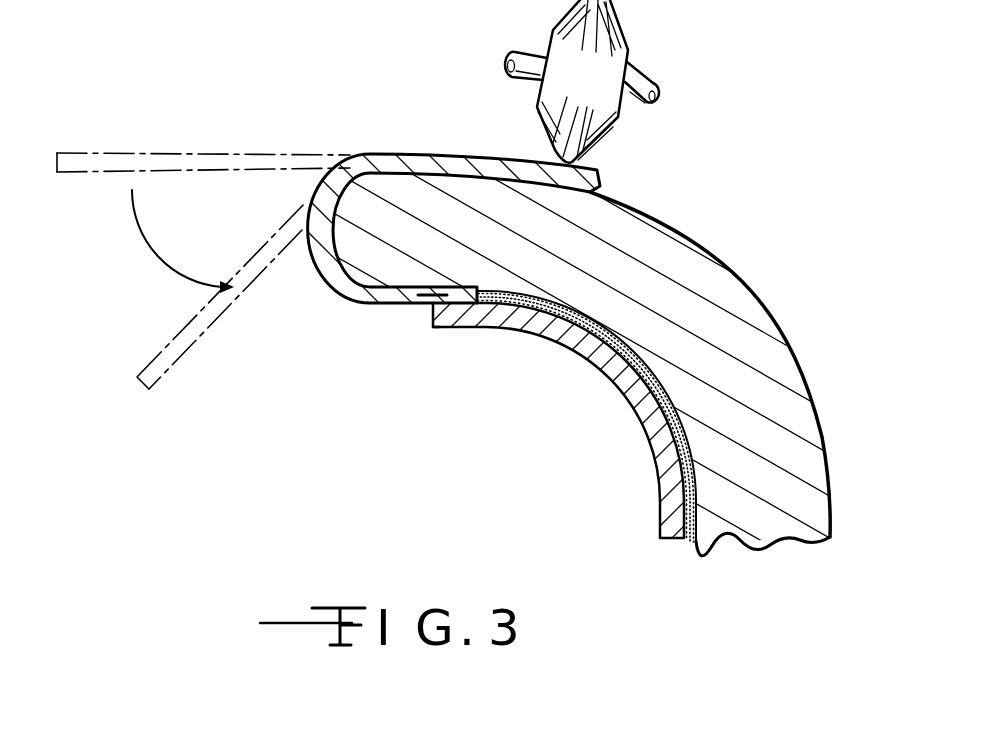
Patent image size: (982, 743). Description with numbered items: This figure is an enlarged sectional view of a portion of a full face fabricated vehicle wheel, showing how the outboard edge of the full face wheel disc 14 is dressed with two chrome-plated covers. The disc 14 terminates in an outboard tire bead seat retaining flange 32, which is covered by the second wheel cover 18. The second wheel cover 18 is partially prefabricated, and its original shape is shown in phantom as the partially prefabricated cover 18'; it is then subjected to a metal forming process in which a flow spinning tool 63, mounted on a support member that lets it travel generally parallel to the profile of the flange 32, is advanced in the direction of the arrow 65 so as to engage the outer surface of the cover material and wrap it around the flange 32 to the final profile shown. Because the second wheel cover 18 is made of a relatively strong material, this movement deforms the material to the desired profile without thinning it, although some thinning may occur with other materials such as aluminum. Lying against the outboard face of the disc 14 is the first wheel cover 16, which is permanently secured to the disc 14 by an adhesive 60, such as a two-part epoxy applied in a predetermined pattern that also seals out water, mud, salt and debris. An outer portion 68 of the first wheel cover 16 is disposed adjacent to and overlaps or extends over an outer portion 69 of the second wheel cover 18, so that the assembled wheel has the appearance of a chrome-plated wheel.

The full face wheel disc 14 is at (825, 418).
The first wheel cover 16 is at (610, 403).
The second wheel cover 18 is at (453, 185).
The partially prefabricated second wheel cover 18' is at (220, 312).
The outboard tire bead seat retaining flange 32 is at (763, 297).
The adhesive 60 is at (688, 543).
The flow spinning tool 63 is at (628, 58).
The arrow 65 is at (154, 257).
The outer portion of the first wheel cover 68 is at (462, 320).
The outer portion of the second wheel cover 69 is at (402, 303).